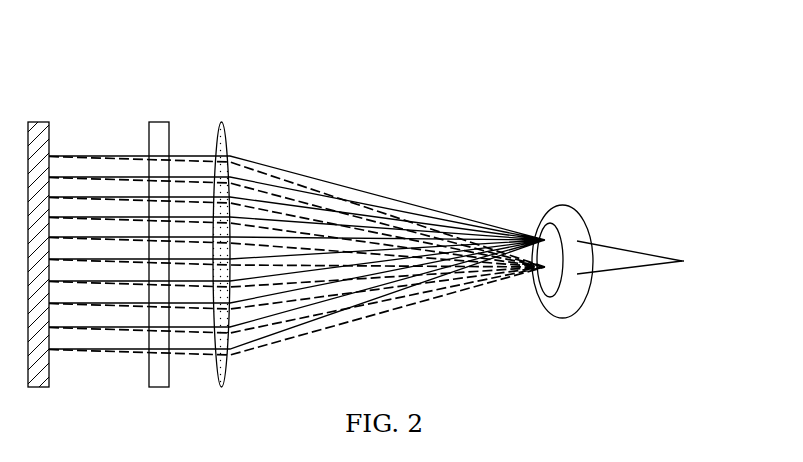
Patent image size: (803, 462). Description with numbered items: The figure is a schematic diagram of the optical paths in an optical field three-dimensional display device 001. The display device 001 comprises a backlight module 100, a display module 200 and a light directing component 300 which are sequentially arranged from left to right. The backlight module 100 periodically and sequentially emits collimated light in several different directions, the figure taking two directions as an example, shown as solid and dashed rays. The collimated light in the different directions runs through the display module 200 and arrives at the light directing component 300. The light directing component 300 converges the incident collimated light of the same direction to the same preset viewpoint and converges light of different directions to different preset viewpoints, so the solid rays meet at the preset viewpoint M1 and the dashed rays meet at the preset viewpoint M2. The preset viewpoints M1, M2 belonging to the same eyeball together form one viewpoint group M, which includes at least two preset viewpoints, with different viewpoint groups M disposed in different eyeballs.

The display device 001 is at (267, 53).
The backlight module 100 is at (40, 124).
The display module 200 is at (159, 124).
The light directing component 300 is at (223, 124).
The preset viewpoint M1 is at (614, 244).
The preset viewpoint M2 is at (614, 274).
The viewpoint group M is at (695, 264).